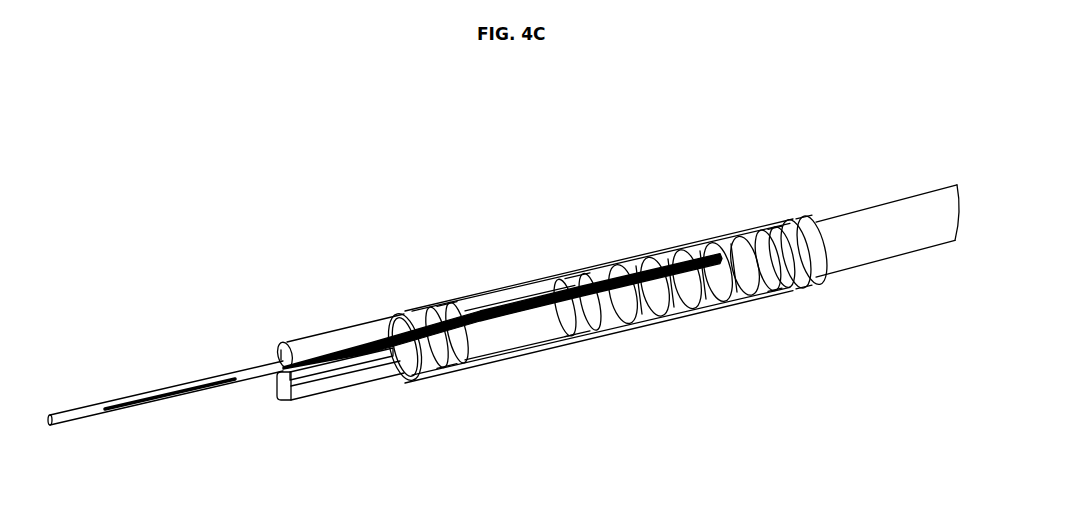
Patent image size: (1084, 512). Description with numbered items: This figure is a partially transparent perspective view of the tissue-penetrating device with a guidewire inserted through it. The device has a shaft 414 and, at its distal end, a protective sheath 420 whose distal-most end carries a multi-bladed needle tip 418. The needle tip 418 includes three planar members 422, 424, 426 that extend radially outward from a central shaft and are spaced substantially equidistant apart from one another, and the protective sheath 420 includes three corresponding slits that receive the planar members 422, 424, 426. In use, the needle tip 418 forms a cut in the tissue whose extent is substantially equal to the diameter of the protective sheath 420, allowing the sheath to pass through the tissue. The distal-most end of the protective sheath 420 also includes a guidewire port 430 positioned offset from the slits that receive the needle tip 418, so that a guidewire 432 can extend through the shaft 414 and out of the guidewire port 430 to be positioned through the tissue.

The shaft 414 is at (870, 258).
The needle tip 418 is at (403, 377).
The protective sheath 420 is at (362, 325).
The planar member 422 is at (312, 334).
The planar member 424 is at (339, 370).
The planar member 426 is at (301, 404).
The guidewire port 430 is at (283, 344).
The guidewire 432 is at (163, 401).